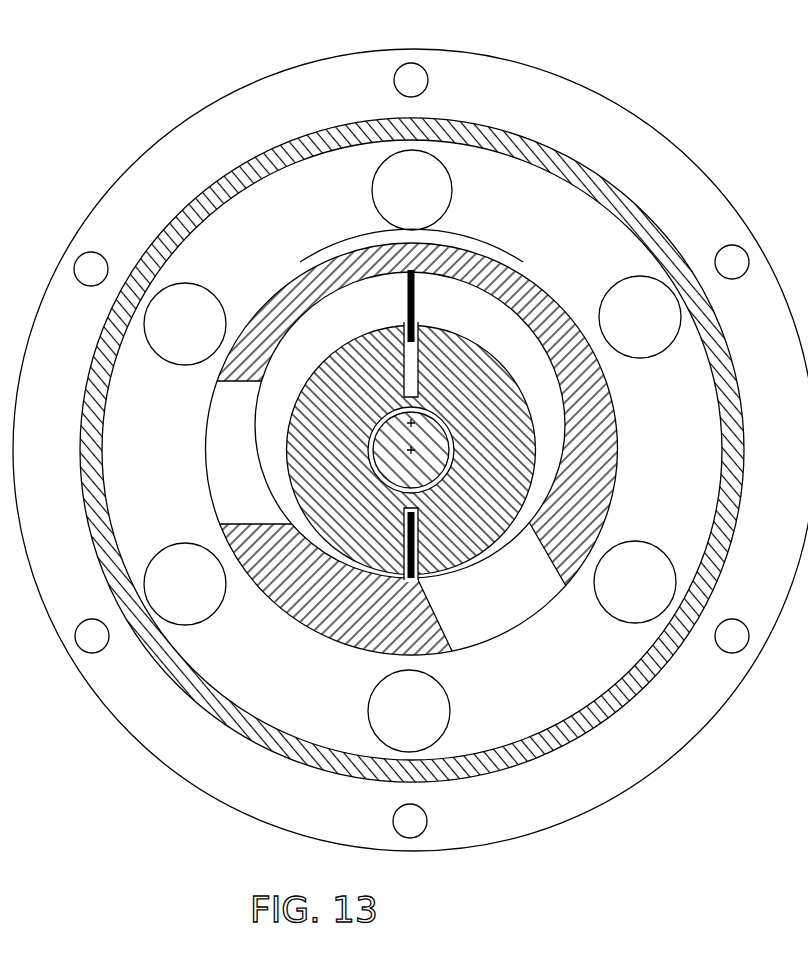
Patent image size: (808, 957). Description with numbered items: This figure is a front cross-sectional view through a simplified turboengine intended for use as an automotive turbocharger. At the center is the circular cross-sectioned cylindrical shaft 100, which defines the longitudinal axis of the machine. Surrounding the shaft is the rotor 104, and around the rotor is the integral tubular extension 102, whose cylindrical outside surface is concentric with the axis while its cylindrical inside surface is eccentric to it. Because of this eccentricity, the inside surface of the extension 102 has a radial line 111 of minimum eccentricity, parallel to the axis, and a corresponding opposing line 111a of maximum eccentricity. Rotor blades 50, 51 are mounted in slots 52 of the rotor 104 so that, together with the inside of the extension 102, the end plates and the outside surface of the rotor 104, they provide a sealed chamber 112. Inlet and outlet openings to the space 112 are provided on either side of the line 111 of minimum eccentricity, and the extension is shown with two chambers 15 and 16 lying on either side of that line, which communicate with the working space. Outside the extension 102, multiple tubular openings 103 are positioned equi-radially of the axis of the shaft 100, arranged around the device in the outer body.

The chamber 15 is at (248, 452).
The chamber 16 is at (491, 586).
The rotor blade 50 is at (417, 302).
The rotor blade 51 is at (300, 532).
The slots 52 is at (414, 346).
The cylindrical shaft 100 is at (418, 463).
The tubular extension 102 is at (470, 256).
The tubular openings 103 is at (421, 173).
The rotor 104 is at (588, 408).
The line of minimum eccentricity 111 is at (397, 580).
The line of maximum eccentricity 111a is at (440, 274).
The sealed chamber 112 is at (410, 425).